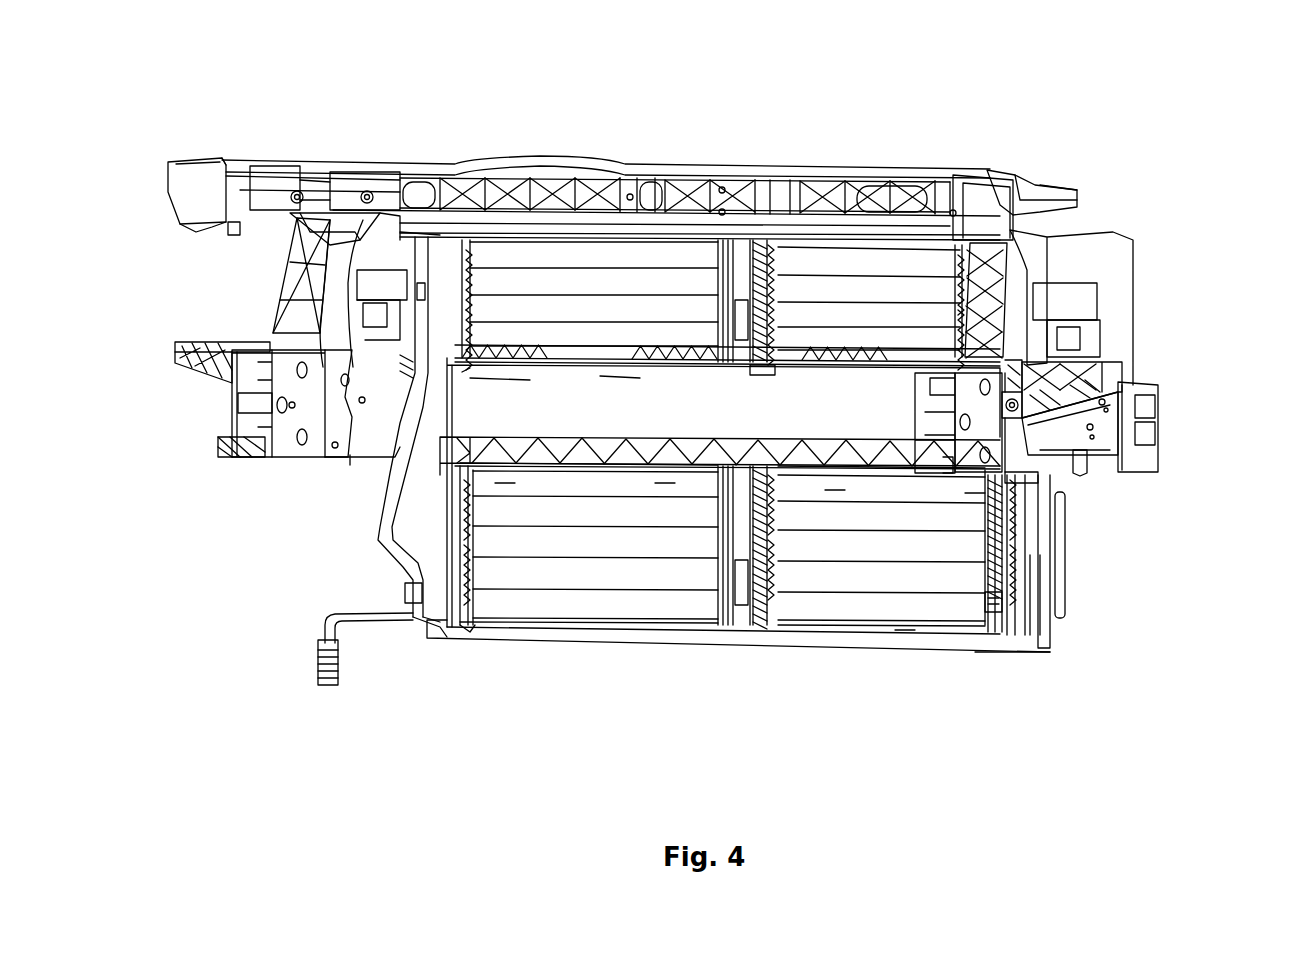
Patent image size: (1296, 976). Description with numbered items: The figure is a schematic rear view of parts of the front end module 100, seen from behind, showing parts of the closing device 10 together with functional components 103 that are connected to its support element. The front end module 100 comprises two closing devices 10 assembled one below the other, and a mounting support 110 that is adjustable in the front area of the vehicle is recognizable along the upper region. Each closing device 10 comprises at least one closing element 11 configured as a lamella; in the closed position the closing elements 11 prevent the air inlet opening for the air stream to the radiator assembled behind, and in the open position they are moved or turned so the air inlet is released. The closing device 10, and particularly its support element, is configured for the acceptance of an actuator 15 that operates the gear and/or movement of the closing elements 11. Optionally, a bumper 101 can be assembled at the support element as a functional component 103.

The front end module 100 is at (1186, 98).
The mounting support 110 is at (415, 168).
The actuator 15 is at (745, 272).
The closing device 10 is at (332, 489).
The closing element 11 is at (843, 612).
The functional component 103 is at (290, 432).
The bumper 101 is at (985, 432).